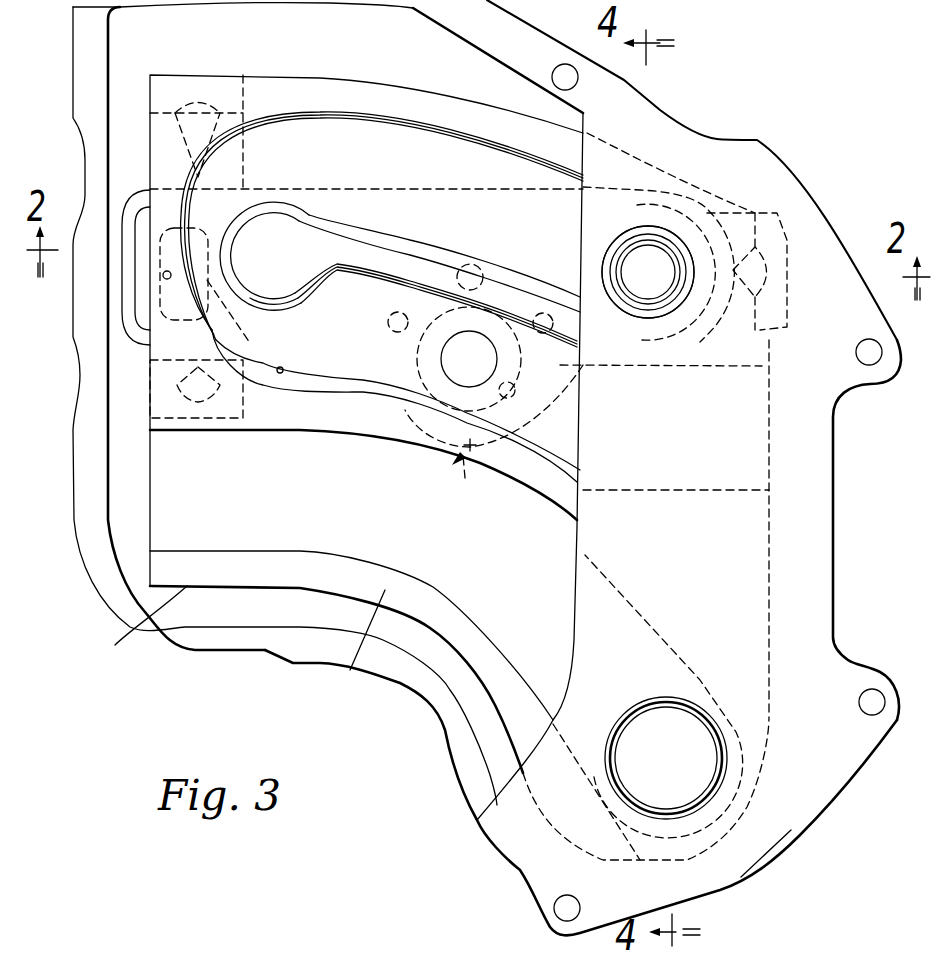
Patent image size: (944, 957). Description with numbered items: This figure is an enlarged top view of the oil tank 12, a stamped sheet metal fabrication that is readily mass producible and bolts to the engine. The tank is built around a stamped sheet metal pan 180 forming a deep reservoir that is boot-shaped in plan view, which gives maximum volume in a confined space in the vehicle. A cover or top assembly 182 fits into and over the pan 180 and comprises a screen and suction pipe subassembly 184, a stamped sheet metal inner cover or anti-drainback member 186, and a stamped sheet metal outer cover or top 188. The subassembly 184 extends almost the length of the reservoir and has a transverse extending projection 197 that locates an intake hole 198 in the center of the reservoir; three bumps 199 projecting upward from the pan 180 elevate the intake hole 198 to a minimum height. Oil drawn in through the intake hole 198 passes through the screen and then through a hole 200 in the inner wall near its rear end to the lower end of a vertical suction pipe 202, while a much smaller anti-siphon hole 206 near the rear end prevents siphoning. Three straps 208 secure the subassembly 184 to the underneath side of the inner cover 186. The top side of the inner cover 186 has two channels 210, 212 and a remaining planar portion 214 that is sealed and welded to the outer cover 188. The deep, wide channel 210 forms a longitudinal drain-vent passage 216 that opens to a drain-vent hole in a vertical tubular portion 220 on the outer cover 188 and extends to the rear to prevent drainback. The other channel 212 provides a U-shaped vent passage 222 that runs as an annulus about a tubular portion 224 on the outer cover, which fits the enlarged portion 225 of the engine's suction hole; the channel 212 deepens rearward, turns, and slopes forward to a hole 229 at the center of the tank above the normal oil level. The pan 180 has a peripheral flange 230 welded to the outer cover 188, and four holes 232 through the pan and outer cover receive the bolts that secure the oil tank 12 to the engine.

The oil tank 12 is at (125, 57).
The stamped sheet metal pan 180 is at (280, 655).
The cover or top assembly 182 is at (696, 125).
The screen and suction pipe subassembly 184 is at (452, 452).
The inner cover or anti-drainback member 186 is at (135, 627).
The outer cover or top 188 is at (820, 595).
The transverse extending projection 197 is at (479, 481).
The intake hole 198 is at (532, 428).
The bumps 199 is at (388, 322).
The hole 200 is at (233, 316).
The vertical suction pipe 202 is at (670, 318).
The anti-siphon hole 206 is at (205, 293).
The straps 208 is at (150, 113).
The channel 210 is at (150, 432).
The channel 212 is at (280, 373).
The planar portion 214 is at (402, 100).
The longitudinal drain-vent passage 216 is at (165, 502).
The vertical tubular portion 220 is at (701, 808).
The U-shaped vent passage 222 is at (310, 345).
The tubular portion 224 is at (633, 318).
The enlarged portion 225 is at (773, 893).
The hole 229 is at (442, 363).
The peripheral flange 230 is at (108, 583).
The holes 232 is at (565, 64).